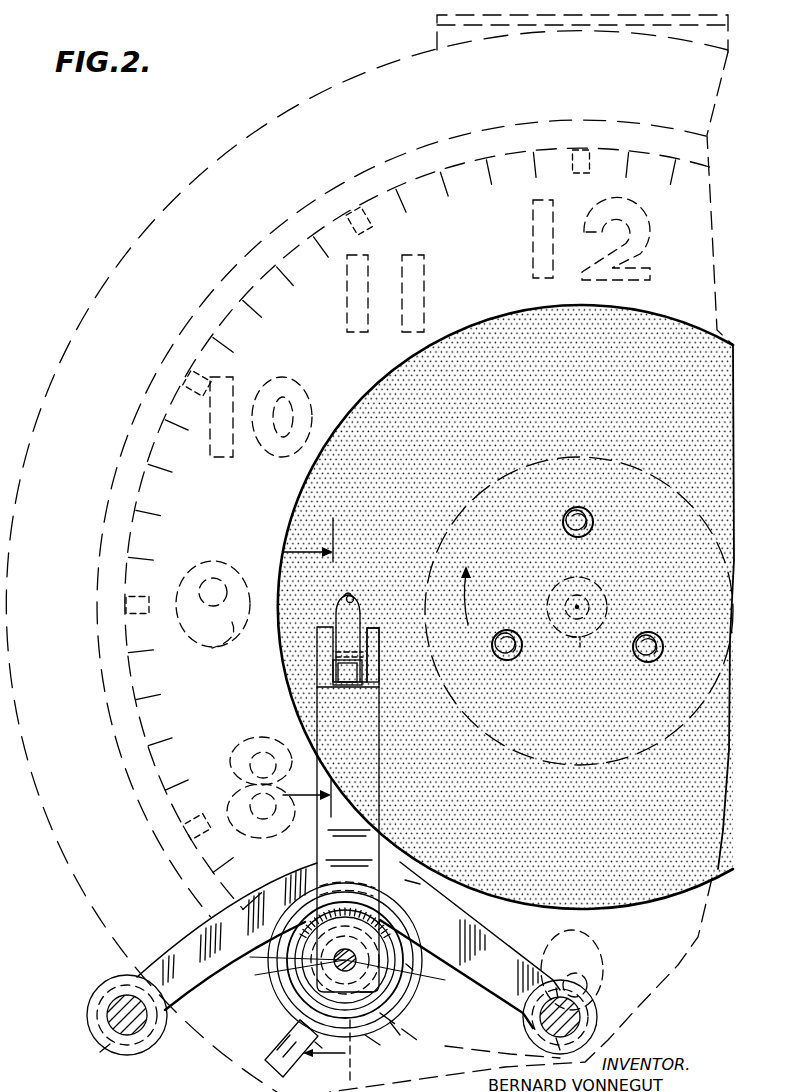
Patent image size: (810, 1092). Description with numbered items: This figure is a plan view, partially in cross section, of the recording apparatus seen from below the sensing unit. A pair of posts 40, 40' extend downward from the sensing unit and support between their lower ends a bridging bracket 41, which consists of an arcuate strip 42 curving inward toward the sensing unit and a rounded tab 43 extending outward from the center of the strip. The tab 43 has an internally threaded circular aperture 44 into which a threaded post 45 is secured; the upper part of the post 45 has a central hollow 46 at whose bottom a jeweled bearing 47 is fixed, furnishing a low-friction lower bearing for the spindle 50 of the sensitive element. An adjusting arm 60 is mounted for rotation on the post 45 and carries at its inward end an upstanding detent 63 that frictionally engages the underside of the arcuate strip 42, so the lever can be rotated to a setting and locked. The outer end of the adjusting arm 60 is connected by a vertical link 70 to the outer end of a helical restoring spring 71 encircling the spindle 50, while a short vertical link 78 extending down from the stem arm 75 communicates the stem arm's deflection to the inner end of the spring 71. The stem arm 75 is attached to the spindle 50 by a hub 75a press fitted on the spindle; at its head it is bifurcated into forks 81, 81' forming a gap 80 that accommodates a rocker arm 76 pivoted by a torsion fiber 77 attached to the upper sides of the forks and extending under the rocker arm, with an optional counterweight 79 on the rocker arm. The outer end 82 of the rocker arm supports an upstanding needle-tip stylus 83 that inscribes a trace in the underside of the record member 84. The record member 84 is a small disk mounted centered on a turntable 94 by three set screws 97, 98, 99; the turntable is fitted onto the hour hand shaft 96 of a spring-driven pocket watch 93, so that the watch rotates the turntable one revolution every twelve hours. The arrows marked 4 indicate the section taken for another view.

The pocket watch 93 is at (63, 356).
The record member 84 is at (636, 893).
The turntable 94 is at (467, 507).
The hour hand shaft 96 is at (605, 590).
The set screw 97 is at (652, 640).
The set screw 98 is at (528, 626).
The set screw 99 is at (563, 524).
The section line 4- 4 is at (295, 667).
The stem arm 75 is at (317, 839).
The hub 75a is at (405, 995).
The rocker arm 76 is at (360, 617).
The torsion fiber 77 is at (340, 668).
The counterweight 79 is at (338, 678).
The gap 80 is at (337, 628).
The fork 81 is at (314, 657).
The fork 81' is at (397, 653).
The outer end of rocker arm 82 is at (354, 598).
The stylus 83 is at (351, 595).
The circular aperture 44 is at (306, 900).
The jeweled bearing 47 is at (268, 965).
The spindle 50 is at (296, 986).
The central hollow 46 is at (296, 1004).
The threaded post 45 is at (458, 864).
The vertical link 70 is at (304, 1058).
The adjusting arm 60 is at (290, 1047).
The helical restoring spring 71 is at (372, 1040).
The rounded tab 43 is at (400, 1032).
The short vertical link 78 is at (413, 970).
The detent 63 is at (422, 884).
The arcuate strip 42 is at (183, 934).
The bridging bracket 41 is at (482, 1000).
The post 40 is at (114, 1025).
The post 40' is at (602, 1017).